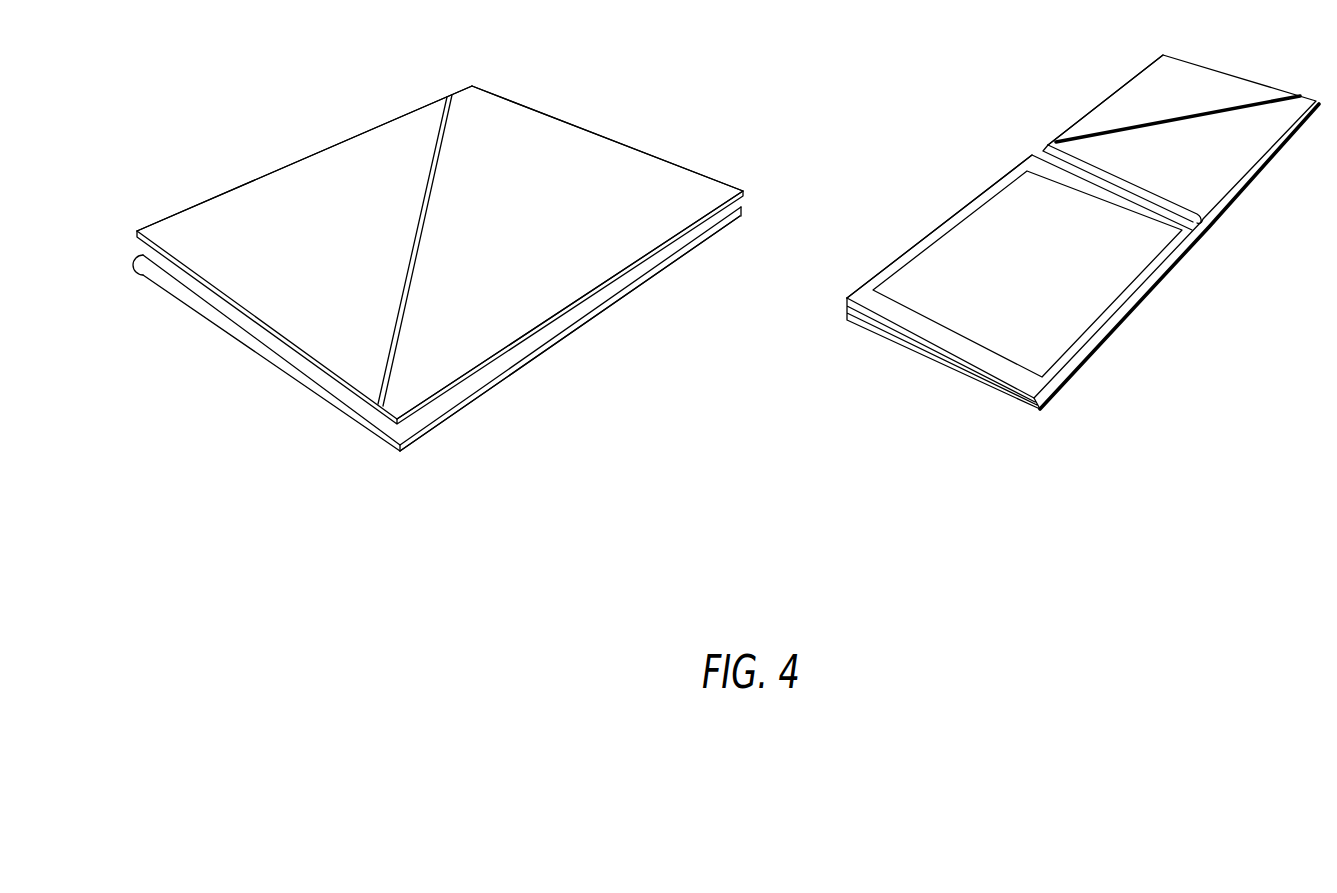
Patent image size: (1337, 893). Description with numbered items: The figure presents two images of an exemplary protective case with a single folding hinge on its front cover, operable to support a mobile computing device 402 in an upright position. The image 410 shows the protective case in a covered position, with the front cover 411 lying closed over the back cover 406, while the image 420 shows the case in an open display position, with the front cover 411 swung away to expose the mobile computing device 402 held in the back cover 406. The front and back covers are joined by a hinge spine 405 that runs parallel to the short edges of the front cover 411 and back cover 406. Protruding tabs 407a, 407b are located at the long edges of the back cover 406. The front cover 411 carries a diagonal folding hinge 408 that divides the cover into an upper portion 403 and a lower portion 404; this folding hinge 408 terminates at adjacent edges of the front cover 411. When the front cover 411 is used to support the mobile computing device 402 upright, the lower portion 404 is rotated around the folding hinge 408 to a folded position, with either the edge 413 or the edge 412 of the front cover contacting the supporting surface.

The mobile computing device 402 is at (197, 295).
The upper portion 403 is at (498, 205).
The lower portion 404 is at (283, 247).
The hinge spine 405 is at (745, 203).
The back cover 406 is at (377, 428).
The protruding tab 407a is at (581, 316).
The protruding tab 407b is at (953, 214).
The folding hinge 408 is at (418, 285).
The image 410 is at (448, 480).
The front cover 411 is at (360, 170).
The edge 412 is at (298, 349).
The edge 413 is at (246, 183).
The image 420 is at (1072, 438).